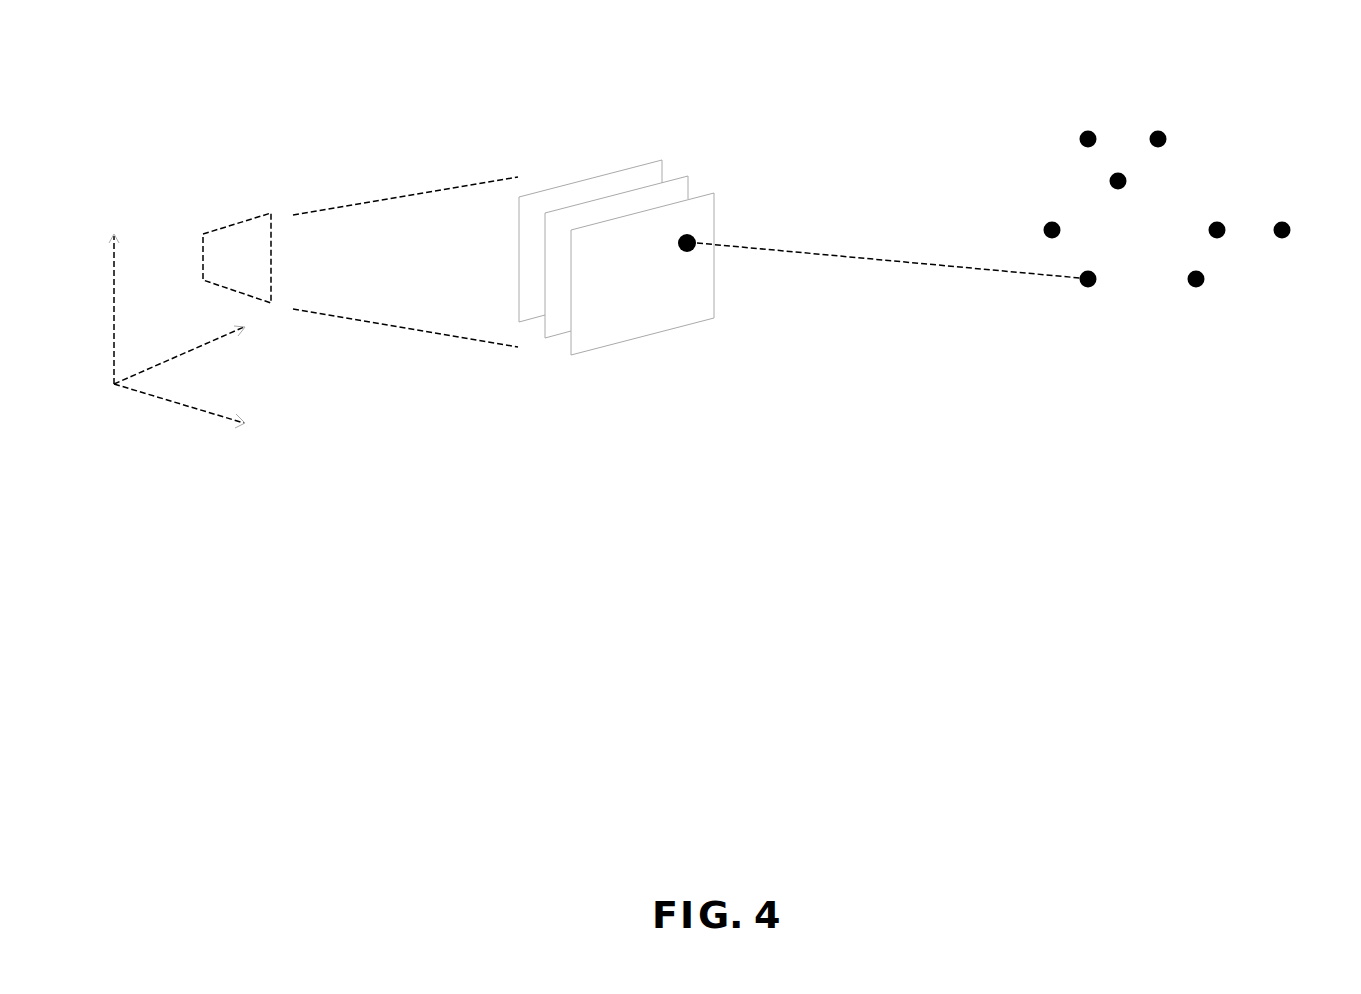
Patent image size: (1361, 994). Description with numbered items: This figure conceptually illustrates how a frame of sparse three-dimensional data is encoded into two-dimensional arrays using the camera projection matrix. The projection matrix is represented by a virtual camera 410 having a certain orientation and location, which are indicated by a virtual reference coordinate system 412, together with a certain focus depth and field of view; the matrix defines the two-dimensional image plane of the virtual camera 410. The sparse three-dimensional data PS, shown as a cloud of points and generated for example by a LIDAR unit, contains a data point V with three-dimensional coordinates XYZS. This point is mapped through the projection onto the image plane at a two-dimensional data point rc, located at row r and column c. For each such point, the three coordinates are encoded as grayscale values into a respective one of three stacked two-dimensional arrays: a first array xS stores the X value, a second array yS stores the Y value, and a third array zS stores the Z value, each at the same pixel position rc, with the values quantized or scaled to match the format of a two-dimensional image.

The virtual camera 410 is at (238, 220).
The virtual reference coordinate system 412 is at (175, 402).
The 2D array x_S xS is at (592, 178).
The 2D array y_S yS is at (615, 195).
The 2D array z_S zS is at (642, 213).
The 2D data point (r, c) rc is at (790, 165).
The sparse 3D data P_S PS is at (1197, 96).
The 3D coordinates (X_S, Y_S, Z_S) XYZS is at (1158, 356).